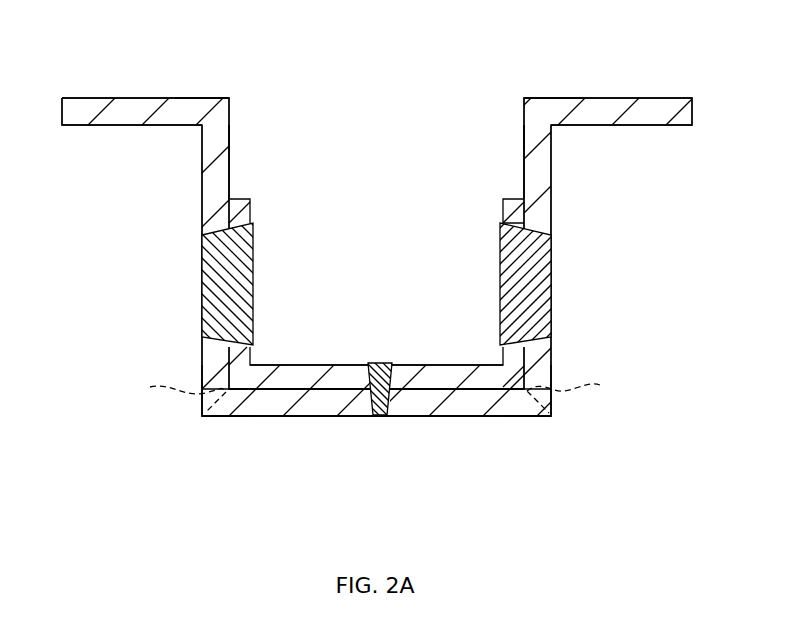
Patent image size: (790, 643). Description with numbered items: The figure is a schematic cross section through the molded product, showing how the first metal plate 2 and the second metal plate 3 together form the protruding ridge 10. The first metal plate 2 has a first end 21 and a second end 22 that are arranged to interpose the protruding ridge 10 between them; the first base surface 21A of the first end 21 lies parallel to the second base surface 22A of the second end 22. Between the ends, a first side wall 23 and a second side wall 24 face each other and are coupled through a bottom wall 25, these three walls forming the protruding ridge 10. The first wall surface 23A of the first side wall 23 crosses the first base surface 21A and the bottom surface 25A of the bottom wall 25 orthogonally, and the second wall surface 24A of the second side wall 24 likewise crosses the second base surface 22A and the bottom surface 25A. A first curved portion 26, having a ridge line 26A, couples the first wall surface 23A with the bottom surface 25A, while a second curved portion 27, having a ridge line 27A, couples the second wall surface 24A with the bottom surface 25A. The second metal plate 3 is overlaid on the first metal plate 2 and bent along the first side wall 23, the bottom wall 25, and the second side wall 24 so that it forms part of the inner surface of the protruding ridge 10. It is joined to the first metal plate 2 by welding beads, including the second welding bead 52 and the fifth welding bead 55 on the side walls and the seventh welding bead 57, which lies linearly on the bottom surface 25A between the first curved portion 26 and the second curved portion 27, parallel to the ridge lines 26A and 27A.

The first metal plate 2 is at (88, 136).
The second metal plate 3 is at (310, 354).
The protruding ridge 10 is at (270, 436).
The first end 21 is at (132, 108).
The first base surface 21A is at (193, 88).
The second end 22 is at (662, 107).
The second base surface 22A is at (603, 87).
The first side wall 23 is at (213, 178).
The first wall surface 23A is at (242, 168).
The second side wall 24 is at (540, 173).
The second wall surface 24A is at (512, 155).
The bottom wall 25 is at (353, 407).
The bottom surface 25A is at (350, 378).
The first curved portion 26 is at (219, 430).
The ridge line of the first curved portion 26A is at (167, 394).
The second curved portion 27 is at (550, 432).
The ridge line of the second curved portion 27A is at (584, 393).
The second welding bead 52 is at (217, 285).
The fifth welding bead 55 is at (537, 273).
The seventh welding bead 57 is at (377, 417).